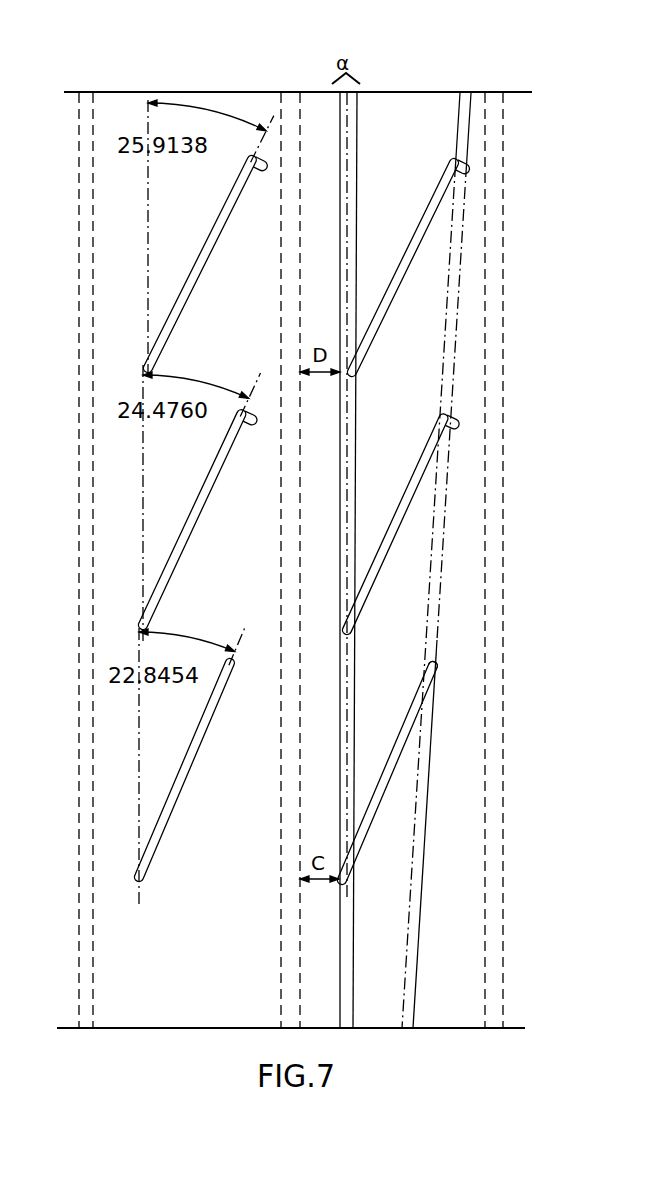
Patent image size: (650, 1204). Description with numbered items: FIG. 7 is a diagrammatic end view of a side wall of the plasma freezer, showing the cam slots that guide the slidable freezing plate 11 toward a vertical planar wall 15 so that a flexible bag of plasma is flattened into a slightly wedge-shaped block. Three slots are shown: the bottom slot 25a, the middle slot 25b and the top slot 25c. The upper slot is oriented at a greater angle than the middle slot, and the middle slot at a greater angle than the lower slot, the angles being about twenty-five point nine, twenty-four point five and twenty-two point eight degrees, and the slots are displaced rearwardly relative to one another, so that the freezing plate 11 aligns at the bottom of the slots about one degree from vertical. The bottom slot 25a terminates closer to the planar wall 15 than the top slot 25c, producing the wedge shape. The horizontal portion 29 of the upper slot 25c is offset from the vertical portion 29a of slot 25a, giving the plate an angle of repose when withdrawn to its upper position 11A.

The freezing plate 11 is at (355, 115).
The upper position of freezing plate 11A is at (471, 100).
The planar wall 15 is at (85, 98).
The bottom slot 25a is at (190, 798).
The middle slot 25b is at (202, 520).
The top slot 25c is at (202, 270).
The horizontal portion of upper slot 29 is at (472, 160).
The vertical portion of slot 29a is at (437, 672).